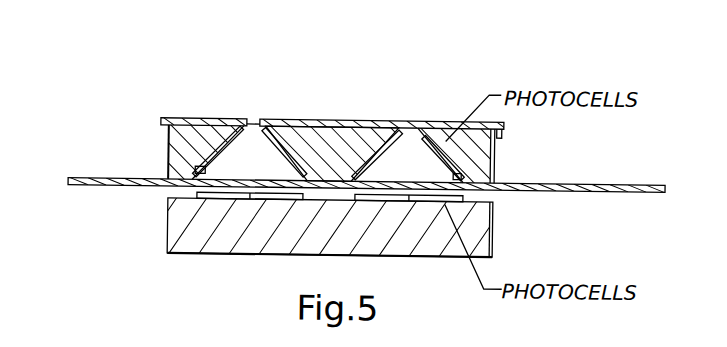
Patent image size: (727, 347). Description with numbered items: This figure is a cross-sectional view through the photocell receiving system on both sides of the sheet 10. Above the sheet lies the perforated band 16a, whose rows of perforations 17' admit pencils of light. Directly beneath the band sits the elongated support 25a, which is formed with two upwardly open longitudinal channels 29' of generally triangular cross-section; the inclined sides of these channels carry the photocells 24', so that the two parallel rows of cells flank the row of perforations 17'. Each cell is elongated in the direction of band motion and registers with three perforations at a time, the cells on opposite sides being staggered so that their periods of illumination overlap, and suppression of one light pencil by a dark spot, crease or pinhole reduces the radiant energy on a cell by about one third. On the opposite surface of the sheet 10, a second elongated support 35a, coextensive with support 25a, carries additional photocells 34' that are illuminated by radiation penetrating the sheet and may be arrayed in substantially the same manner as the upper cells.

The band 16a is at (193, 119).
The perforations 17' is at (244, 89).
The photocells 24' is at (250, 122).
The support 25a is at (340, 140).
The longitudinal channel 29' is at (162, 158).
The sheet 10 is at (570, 189).
The support 35a is at (182, 240).
The photocells 34' is at (249, 254).